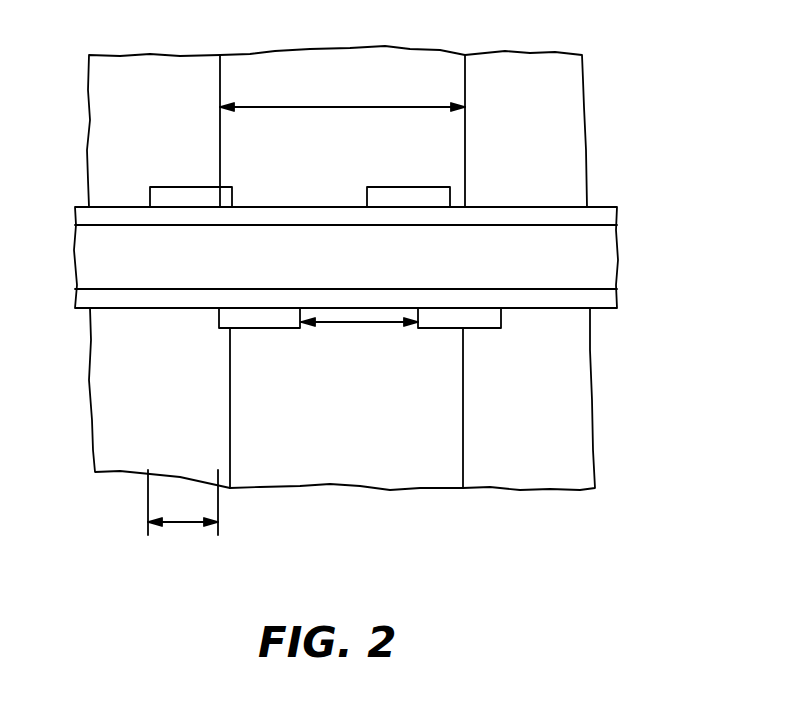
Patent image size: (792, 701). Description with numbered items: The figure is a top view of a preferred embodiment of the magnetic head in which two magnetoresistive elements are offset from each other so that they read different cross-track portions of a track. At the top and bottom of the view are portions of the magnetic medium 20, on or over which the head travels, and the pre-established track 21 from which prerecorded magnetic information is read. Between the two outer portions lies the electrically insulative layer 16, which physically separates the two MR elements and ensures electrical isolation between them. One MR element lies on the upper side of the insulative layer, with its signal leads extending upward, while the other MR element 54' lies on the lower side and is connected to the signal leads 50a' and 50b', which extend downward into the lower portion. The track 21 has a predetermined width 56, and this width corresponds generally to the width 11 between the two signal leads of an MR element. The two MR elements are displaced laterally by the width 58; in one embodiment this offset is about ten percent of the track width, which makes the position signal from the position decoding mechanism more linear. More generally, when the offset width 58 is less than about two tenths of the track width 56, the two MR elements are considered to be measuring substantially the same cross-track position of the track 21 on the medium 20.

The magnetic medium 20 is at (562, 88).
The track 21 is at (413, 462).
The electrically insulative layer 16 is at (593, 263).
The MR element 54' is at (390, 303).
The signal lead 50a' is at (267, 355).
The signal lead 50b' is at (479, 356).
The track width 56 is at (342, 96).
The lead width 11 is at (359, 334).
The offset width 58 is at (183, 513).